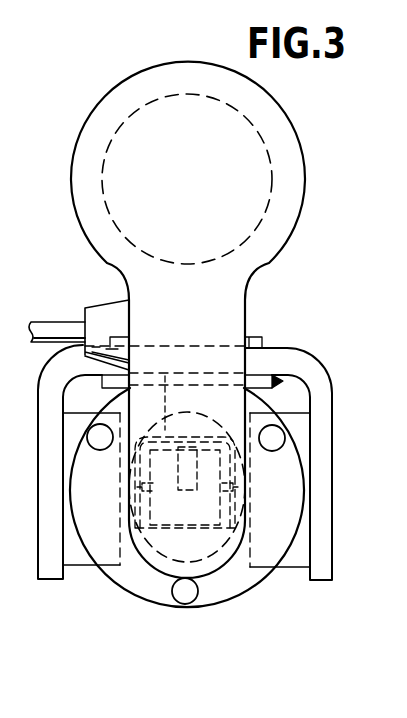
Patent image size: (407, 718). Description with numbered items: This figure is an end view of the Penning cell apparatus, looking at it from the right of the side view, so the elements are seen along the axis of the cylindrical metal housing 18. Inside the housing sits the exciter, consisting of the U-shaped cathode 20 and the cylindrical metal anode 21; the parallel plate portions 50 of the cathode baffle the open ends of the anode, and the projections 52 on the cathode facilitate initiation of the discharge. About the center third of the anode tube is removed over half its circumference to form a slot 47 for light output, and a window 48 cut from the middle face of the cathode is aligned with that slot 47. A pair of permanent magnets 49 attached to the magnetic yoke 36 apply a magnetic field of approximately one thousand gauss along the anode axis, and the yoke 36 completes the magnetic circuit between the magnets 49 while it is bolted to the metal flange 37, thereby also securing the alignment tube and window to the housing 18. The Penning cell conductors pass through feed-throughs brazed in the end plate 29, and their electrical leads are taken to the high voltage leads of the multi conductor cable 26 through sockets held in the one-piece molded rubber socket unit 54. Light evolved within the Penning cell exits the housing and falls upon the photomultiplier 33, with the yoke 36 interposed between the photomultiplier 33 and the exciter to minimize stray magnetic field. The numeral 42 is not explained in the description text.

The cylindrical metal housing 18 is at (186, 440).
The U-shaped cathode 20 is at (161, 426).
The cylindrical metal anode 21 is at (160, 537).
The multi conductor cable 26 is at (87, 318).
The end plate 29 is at (203, 597).
The photomultiplier 33 is at (250, 121).
The magnetic yoke 36 is at (263, 360).
The metal flange 37 is at (291, 386).
The U-shaped frame 42 is at (50, 551).
The slot 47 is at (189, 483).
The window 48 is at (193, 424).
The permanent magnets 49 is at (82, 556).
The parallel plate portions 50 is at (222, 556).
The projections 52 is at (135, 487).
The molded rubber socket unit 54 is at (100, 100).